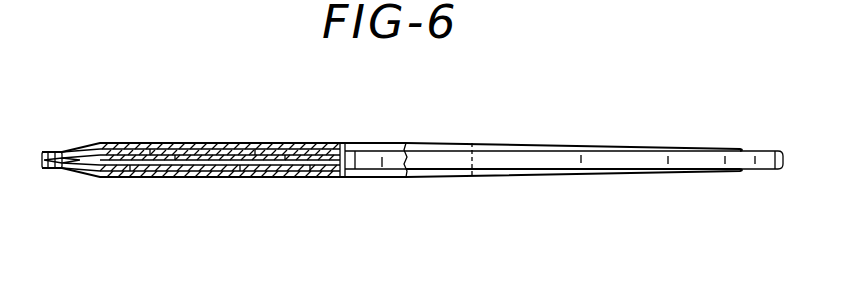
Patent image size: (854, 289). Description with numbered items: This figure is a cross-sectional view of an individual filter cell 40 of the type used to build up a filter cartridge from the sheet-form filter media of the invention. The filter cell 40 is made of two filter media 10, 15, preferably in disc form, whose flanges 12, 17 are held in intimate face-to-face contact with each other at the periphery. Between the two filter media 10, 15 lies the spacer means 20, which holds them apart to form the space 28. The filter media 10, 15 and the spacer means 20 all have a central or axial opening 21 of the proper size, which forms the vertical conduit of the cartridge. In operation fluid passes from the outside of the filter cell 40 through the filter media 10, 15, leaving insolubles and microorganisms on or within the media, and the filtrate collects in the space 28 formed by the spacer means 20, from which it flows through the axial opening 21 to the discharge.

The filter medium 10 is at (575, 150).
The flange 12 is at (62, 167).
The filter medium 15 is at (570, 172).
The flange 17 is at (66, 149).
The spacer means 20 is at (228, 165).
The axial opening 21 is at (347, 150).
The space 28 is at (272, 152).
The filter cell 40 is at (451, 134).